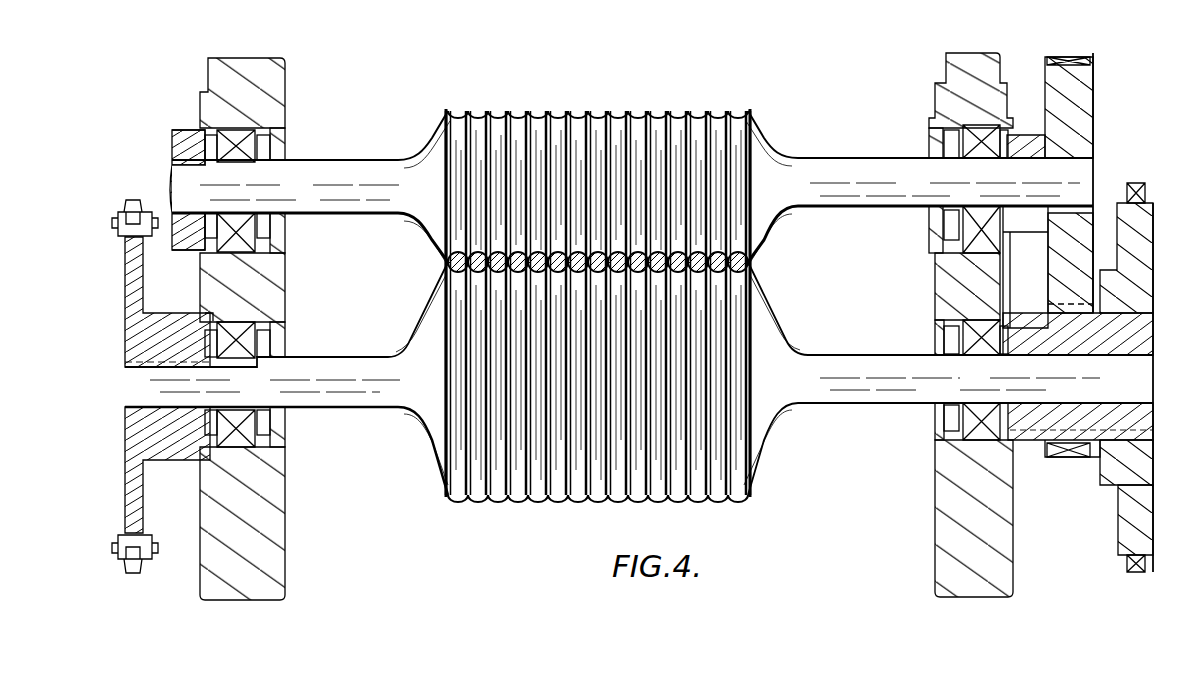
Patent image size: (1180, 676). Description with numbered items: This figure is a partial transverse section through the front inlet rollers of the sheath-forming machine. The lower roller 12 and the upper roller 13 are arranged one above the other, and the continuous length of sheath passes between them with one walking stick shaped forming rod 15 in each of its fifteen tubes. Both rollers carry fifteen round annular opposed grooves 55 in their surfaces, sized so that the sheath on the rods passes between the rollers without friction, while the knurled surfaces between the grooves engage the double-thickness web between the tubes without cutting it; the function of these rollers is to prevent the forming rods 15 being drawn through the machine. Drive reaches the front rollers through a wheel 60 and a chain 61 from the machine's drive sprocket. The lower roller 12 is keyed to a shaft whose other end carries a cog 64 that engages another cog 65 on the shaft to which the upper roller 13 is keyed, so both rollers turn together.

The inlet roller 12 is at (560, 500).
The inlet roller 13 is at (522, 110).
The forming rods 15 is at (446, 262).
The round annular opposed grooves 55 is at (460, 110).
The wheel 60 is at (135, 333).
The chain 61 is at (118, 218).
The cog 64 is at (1125, 498).
The cog 65 is at (1075, 130).